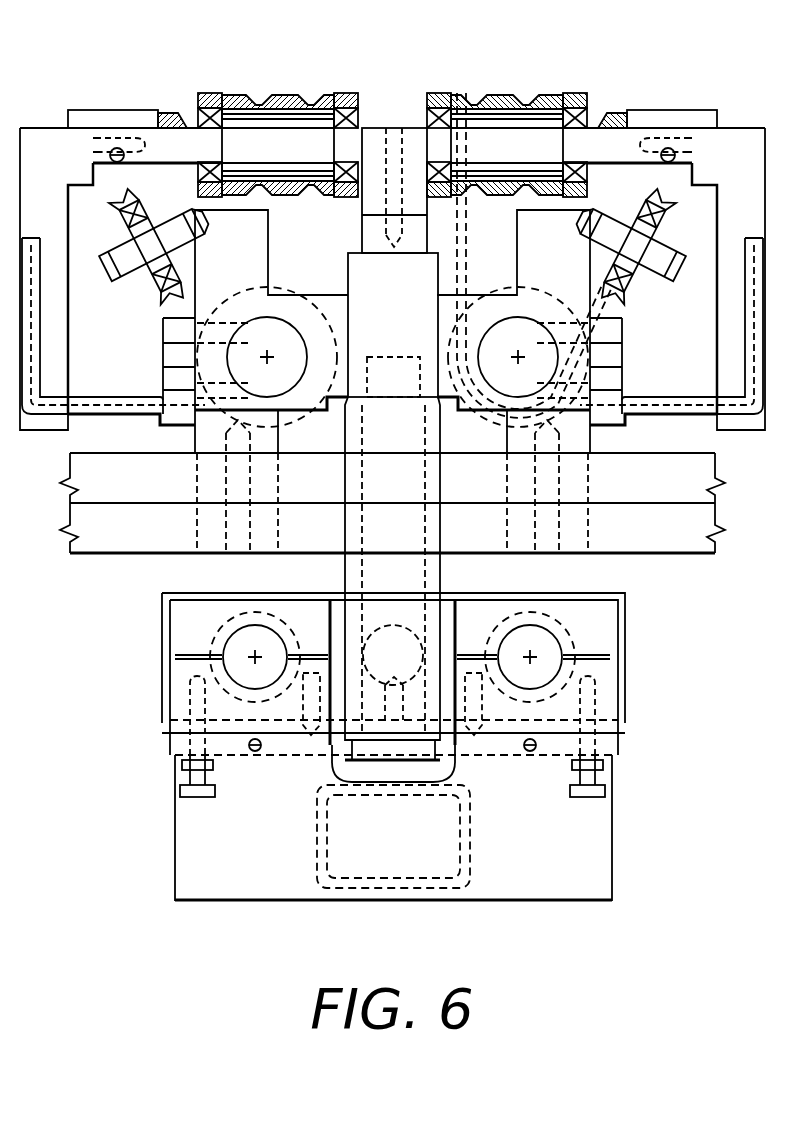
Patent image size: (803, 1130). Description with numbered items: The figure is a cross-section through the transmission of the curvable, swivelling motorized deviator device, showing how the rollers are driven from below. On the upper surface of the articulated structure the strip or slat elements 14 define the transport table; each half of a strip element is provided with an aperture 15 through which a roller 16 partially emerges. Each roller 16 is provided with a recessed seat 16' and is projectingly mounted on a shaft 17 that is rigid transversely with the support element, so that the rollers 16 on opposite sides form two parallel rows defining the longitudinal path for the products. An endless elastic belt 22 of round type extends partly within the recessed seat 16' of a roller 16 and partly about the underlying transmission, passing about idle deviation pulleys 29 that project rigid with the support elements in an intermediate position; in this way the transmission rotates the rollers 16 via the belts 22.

The strip or slat element 14 is at (115, 118).
The aperture 15 is at (192, 128).
The roller 16 is at (421, 104).
The recessed seat 16' is at (392, 106).
The shaft 17 is at (532, 140).
The endless elastic belt 22 is at (463, 93).
The idle deviation pulley 29 is at (118, 212).